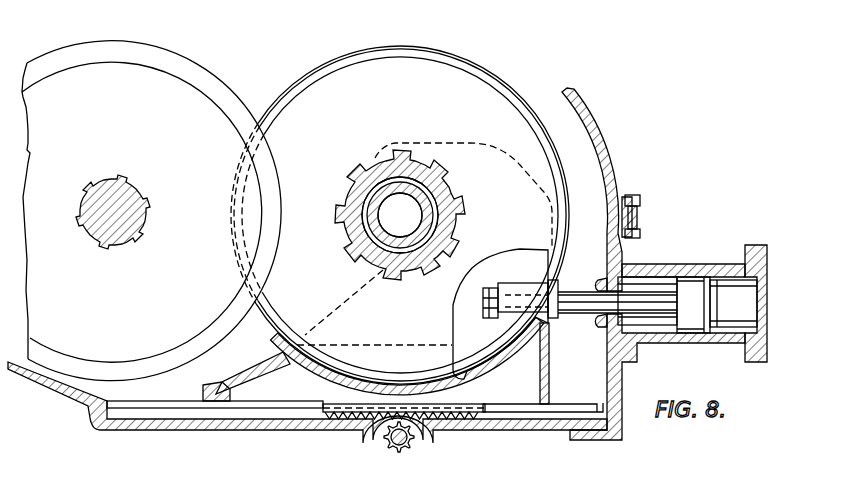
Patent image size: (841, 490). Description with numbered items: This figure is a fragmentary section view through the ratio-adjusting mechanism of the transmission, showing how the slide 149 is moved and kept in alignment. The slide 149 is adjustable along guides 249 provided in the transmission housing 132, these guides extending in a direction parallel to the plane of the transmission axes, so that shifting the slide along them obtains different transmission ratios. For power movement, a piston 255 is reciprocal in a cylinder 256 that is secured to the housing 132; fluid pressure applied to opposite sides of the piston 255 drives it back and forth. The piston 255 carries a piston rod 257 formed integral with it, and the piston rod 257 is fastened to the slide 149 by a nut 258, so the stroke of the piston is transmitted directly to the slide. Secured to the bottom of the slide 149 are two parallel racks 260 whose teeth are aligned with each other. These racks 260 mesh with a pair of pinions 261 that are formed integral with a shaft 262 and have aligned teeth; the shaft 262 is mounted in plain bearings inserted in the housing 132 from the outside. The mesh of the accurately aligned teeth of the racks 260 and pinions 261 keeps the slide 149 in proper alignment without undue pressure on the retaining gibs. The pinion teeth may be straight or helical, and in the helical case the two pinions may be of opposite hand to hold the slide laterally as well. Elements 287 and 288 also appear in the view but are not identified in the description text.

The transmission housing 132 is at (598, 441).
The slide 149 is at (546, 368).
The guides 249 is at (567, 410).
The piston 255 is at (692, 288).
The cylinder 256 is at (704, 340).
The piston rod 257 is at (574, 300).
The nut 258 is at (495, 282).
The racks 260 is at (473, 424).
The pinions 261 is at (396, 450).
The shaft 262 is at (406, 448).
The base plate 287 is at (307, 426).
The slide bar 288 is at (215, 445).